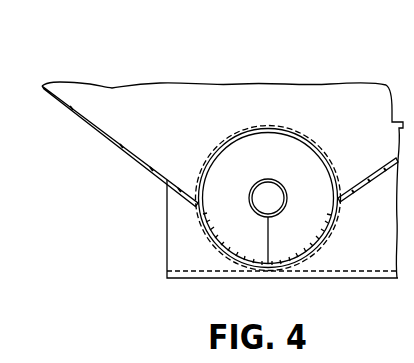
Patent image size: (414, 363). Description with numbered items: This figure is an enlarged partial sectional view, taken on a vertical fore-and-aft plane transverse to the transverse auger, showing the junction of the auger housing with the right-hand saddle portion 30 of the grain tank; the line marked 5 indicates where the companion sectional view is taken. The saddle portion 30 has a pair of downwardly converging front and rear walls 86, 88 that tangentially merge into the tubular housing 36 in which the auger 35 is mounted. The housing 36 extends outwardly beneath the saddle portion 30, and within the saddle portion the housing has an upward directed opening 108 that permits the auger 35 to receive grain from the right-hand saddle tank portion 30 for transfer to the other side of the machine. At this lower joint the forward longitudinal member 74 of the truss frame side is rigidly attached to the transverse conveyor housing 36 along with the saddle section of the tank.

The right-hand saddle portion 30 is at (176, 120).
The rear wall 88 is at (104, 136).
The forward longitudinal member 74 is at (167, 238).
The auger 35 is at (228, 238).
The tubular housing 36 is at (294, 128).
The front wall 86 is at (372, 180).
The upward directed opening 108 is at (259, 150).
The section line 5- 5 is at (400, 82).